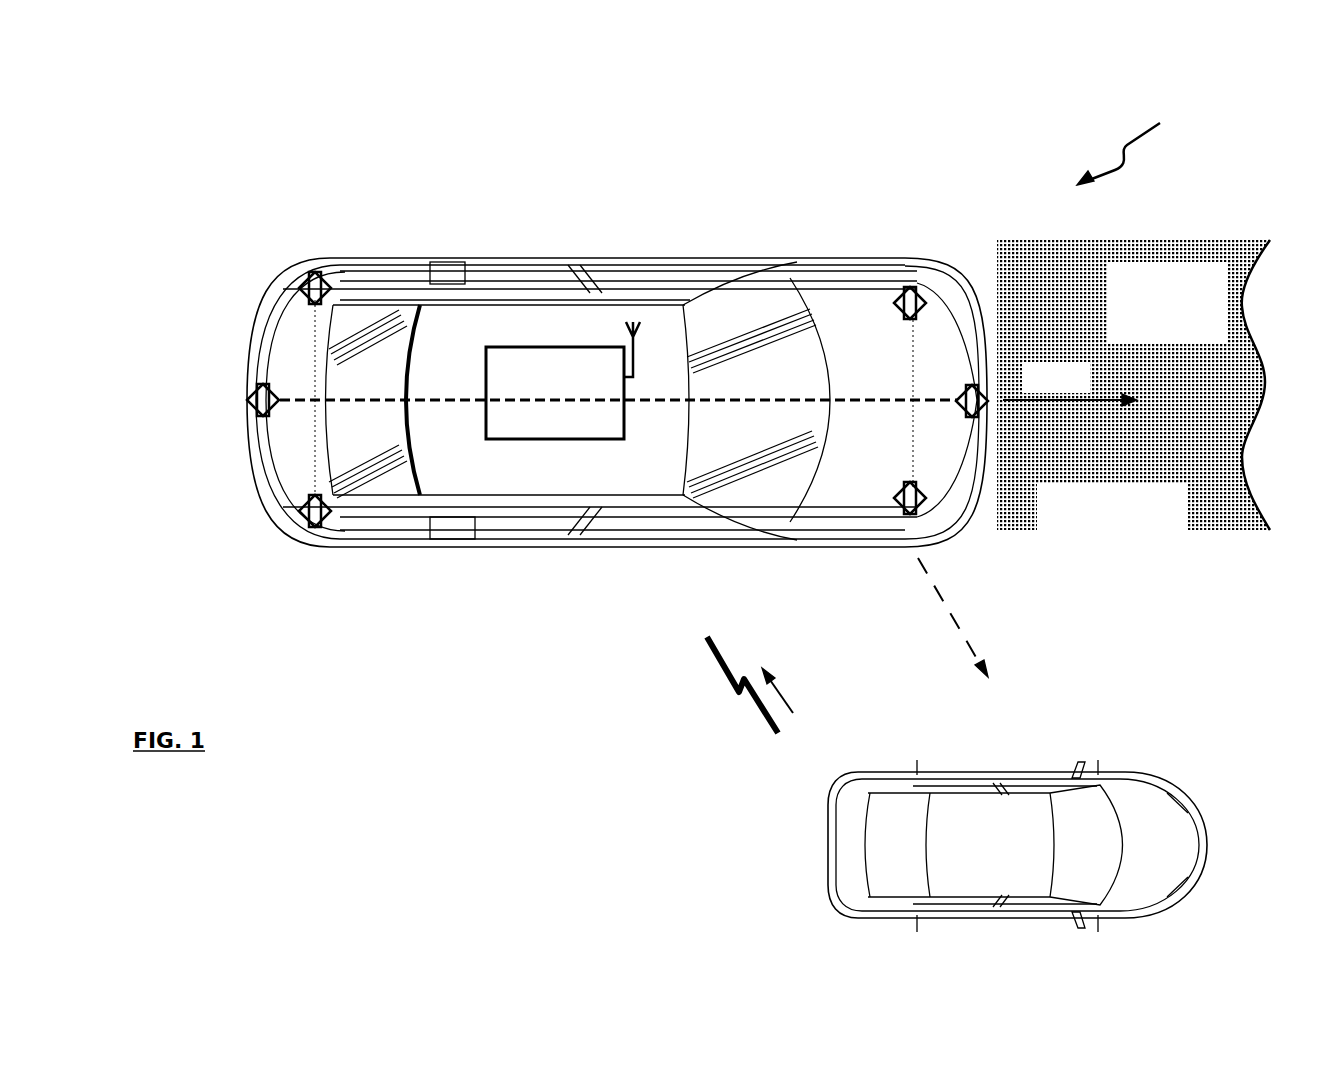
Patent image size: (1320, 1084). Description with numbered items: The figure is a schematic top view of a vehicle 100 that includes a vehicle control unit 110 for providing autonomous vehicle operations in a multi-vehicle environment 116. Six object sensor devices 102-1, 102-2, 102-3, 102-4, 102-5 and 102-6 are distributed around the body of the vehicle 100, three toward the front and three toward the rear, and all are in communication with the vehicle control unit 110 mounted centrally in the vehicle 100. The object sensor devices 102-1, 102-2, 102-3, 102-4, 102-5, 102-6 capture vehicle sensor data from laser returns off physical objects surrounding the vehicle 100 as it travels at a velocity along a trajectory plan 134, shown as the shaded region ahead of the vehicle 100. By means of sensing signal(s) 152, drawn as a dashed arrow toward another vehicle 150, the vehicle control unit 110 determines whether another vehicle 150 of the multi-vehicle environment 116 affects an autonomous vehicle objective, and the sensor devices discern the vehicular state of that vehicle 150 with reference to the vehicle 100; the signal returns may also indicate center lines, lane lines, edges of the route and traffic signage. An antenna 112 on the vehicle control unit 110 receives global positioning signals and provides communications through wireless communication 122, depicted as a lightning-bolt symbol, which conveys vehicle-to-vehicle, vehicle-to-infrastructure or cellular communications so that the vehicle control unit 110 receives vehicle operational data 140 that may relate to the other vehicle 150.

The vehicle 100 is at (817, 263).
The object sensor device 102-1 is at (985, 415).
The object sensor device 102-2 is at (903, 318).
The object sensor device 102-3 is at (903, 480).
The object sensor device 102-4 is at (313, 270).
The object sensor device 102-5 is at (250, 392).
The object sensor device 102-6 is at (293, 503).
The vehicle control unit 110 is at (565, 446).
The antenna 112 is at (640, 360).
The multi-vehicle environment 116 is at (1232, 115).
The wireless communication 122 is at (765, 720).
The trajectory plan 134 is at (1183, 338).
The vehicle operational data 140 is at (777, 693).
The another vehicle 150 is at (1040, 770).
The sensing signal(s) 152 is at (960, 630).